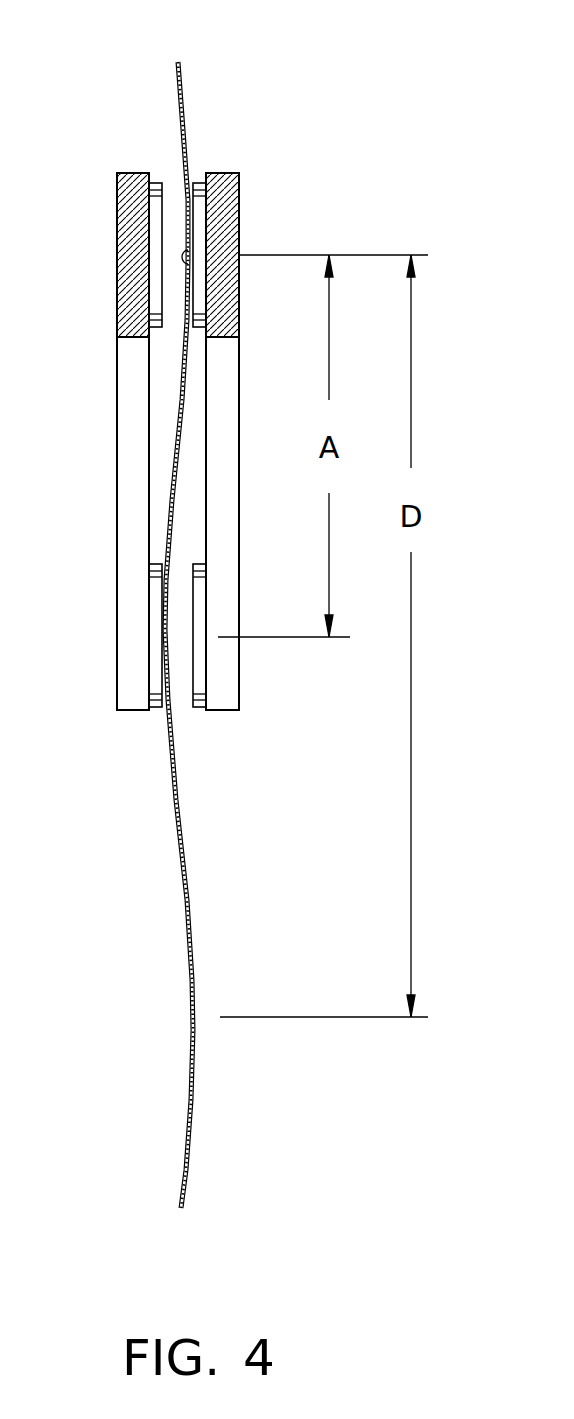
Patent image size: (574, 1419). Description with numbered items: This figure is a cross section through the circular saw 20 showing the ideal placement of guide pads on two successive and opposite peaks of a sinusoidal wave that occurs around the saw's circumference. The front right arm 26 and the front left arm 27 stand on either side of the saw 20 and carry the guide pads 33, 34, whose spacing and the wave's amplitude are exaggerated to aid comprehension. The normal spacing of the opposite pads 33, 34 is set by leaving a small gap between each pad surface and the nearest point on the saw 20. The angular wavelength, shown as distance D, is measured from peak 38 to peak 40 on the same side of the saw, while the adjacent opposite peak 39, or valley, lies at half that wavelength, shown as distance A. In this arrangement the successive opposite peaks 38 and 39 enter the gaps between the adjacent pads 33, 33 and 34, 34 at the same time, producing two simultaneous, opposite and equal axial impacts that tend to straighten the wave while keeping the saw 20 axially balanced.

The circular saw 20 is at (186, 86).
The front right arm 26 is at (239, 200).
The front left arm 27 is at (117, 212).
The guide pads 33 is at (157, 183).
The guide pads 34 is at (155, 712).
The peak 38 is at (239, 250).
The opposite peak 39 is at (170, 637).
The peak 40 is at (198, 1023).